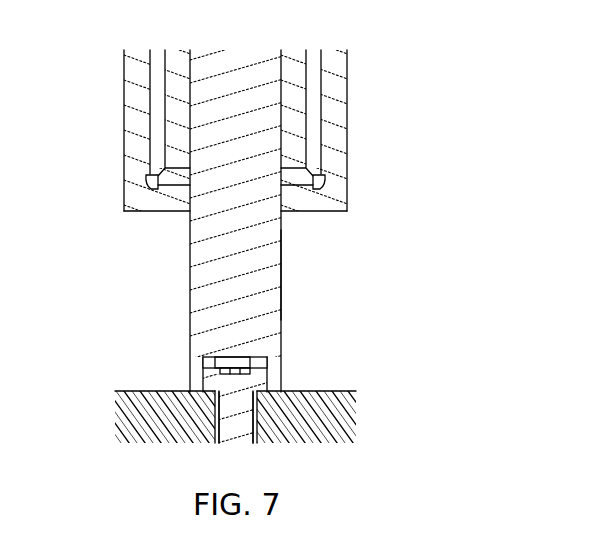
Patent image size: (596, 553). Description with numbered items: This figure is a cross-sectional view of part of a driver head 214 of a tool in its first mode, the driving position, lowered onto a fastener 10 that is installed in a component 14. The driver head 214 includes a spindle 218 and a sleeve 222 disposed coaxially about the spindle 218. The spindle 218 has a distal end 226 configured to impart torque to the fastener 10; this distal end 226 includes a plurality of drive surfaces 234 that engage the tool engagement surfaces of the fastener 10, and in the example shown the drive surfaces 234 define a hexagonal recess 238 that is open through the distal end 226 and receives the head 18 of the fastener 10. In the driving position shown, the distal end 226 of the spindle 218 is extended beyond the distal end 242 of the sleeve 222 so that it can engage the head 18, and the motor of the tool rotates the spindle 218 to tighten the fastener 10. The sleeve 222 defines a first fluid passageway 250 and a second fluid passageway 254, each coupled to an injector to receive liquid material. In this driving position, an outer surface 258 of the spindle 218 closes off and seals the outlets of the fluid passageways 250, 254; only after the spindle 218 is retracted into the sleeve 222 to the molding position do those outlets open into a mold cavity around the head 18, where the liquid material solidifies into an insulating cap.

The fastener 10 is at (217, 426).
The component 14 is at (343, 391).
The head 18 is at (260, 382).
The driver head 214 is at (124, 130).
The spindle 218 is at (221, 262).
The sleeve 222 is at (338, 131).
The distal end 226 is at (196, 389).
The drive surfaces 234 is at (210, 364).
The hexagonal recess 238 is at (230, 357).
The distal end 242 is at (340, 211).
The first fluid passageway 250 is at (157, 80).
The second fluid passageway 254 is at (315, 80).
The outer surface 258 is at (281, 275).